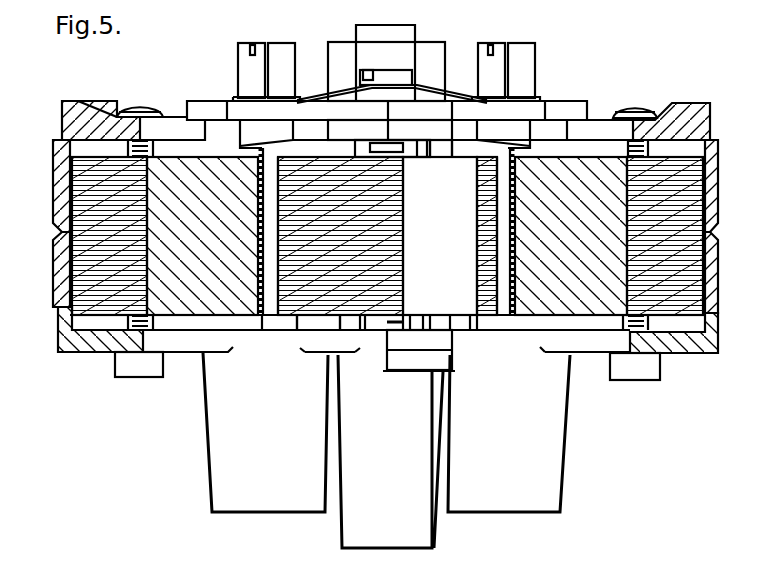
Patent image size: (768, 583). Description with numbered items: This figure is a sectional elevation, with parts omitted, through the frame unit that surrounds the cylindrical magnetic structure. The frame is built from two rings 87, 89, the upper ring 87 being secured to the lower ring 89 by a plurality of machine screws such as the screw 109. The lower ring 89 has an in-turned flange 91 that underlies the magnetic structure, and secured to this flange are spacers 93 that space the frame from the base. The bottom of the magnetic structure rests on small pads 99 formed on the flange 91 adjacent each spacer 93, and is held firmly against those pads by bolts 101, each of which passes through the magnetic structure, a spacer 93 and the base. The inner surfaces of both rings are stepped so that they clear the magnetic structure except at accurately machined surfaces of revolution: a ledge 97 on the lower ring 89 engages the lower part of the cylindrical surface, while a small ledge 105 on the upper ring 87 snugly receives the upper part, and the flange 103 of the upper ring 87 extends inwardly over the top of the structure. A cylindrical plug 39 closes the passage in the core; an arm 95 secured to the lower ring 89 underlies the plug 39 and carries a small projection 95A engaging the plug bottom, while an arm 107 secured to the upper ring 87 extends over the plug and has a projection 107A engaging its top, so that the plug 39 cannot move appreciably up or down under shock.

The plug 39 is at (470, 305).
The ring 87 is at (56, 184).
The ring 89 is at (54, 287).
The in-turned flange 91 is at (98, 342).
The spacers 93 is at (348, 529).
The arm 95 is at (413, 352).
The projection 95A is at (450, 334).
The ledge 97 is at (708, 296).
The pads 99 is at (343, 322).
The bolts 101 is at (378, 322).
The flange 103 is at (113, 114).
The ledge 105 is at (718, 170).
The arm 107 is at (438, 134).
The projection 107A is at (432, 160).
The screw 109 is at (143, 102).